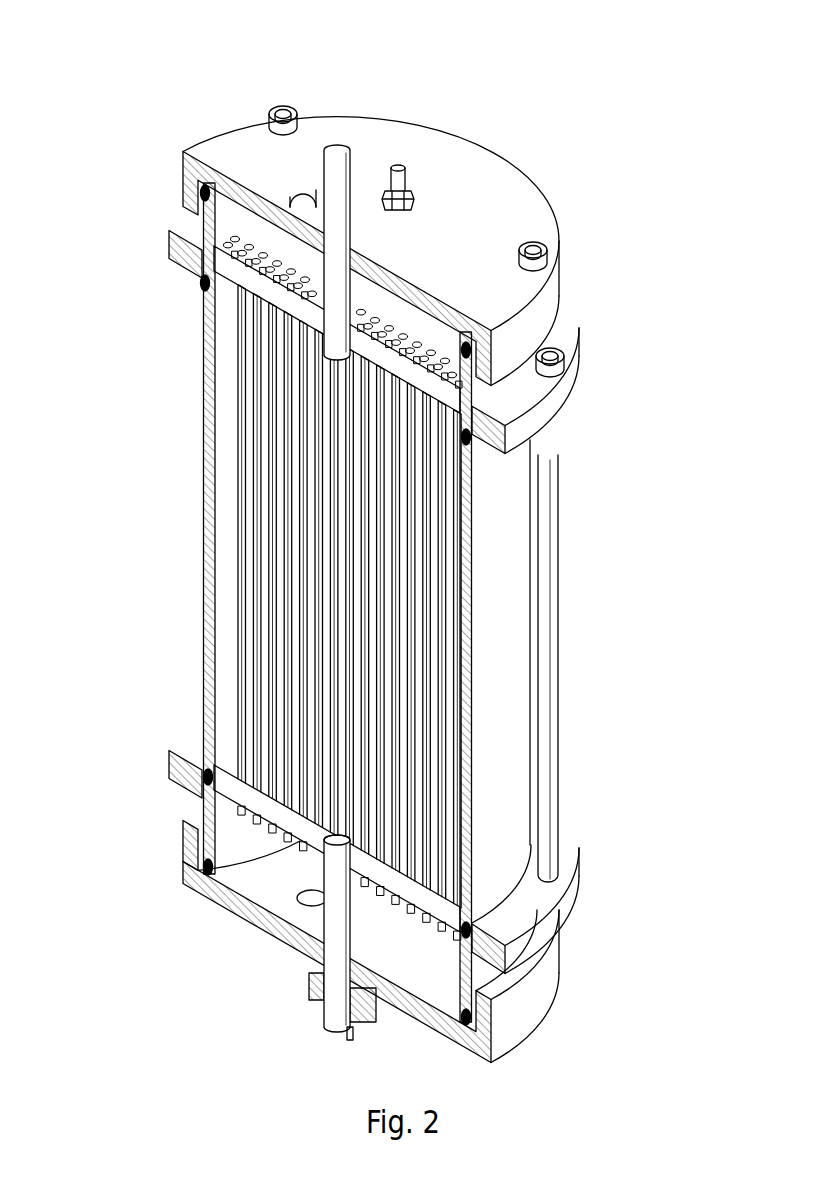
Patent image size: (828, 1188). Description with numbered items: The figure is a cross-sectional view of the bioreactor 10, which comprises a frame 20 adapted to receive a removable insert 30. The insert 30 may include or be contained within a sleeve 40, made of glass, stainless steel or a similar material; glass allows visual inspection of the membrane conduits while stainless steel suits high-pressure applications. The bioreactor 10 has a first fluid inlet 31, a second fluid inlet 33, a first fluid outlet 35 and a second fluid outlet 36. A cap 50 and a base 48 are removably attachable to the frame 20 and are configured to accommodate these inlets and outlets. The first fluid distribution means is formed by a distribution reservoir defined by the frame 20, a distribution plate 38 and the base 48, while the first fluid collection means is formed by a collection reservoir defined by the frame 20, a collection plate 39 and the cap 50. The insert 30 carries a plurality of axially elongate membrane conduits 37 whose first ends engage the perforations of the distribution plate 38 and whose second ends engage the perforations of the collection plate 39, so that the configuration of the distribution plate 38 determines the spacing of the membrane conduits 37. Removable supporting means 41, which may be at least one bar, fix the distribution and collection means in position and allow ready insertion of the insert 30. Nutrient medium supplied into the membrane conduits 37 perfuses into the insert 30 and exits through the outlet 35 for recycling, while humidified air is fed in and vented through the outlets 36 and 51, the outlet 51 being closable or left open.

The bioreactor 10 is at (367, 576).
The frame 20 is at (573, 395).
The removable insert 30 is at (442, 736).
The first fluid inlet 31 is at (305, 907).
The second fluid inlet 33 is at (398, 166).
The first fluid outlet 35 is at (292, 191).
The second fluid outlet 36 is at (323, 1013).
The membrane conduits 37 is at (437, 668).
The distribution plate 38 is at (196, 848).
The collection plate 39 is at (215, 283).
The sleeve 40 is at (505, 550).
The removable supporting means 41 is at (559, 784).
The base 48 is at (523, 1016).
The cap 50 is at (527, 213).
The outlet 51 is at (341, 151).